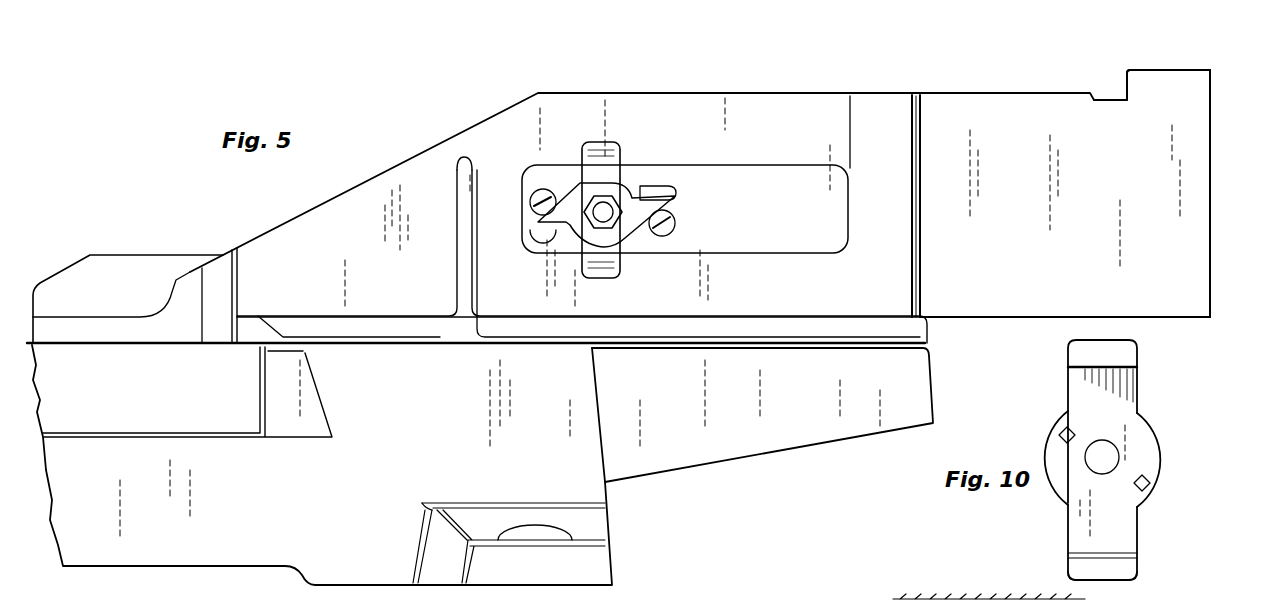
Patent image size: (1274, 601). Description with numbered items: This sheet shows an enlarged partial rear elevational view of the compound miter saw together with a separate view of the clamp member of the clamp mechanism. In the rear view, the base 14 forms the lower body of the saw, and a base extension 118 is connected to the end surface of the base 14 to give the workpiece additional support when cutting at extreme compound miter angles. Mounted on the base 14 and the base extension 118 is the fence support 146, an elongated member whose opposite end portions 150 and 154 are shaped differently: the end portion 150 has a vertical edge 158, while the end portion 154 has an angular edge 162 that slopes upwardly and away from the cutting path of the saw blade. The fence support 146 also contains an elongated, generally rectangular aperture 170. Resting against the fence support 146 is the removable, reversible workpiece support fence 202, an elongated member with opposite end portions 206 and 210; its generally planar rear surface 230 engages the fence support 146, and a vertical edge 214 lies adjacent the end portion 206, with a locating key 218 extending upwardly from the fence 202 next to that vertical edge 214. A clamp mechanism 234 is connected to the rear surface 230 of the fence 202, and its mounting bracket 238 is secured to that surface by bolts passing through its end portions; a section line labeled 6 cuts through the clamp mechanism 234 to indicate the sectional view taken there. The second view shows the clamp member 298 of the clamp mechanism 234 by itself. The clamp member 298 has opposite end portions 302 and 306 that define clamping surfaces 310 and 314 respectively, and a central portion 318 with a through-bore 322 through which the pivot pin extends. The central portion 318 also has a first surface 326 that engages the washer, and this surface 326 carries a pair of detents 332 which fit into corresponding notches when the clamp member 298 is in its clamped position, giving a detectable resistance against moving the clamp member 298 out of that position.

In FIG. 5, the base 14 is at (398, 461).
In FIG. 5, the base extension 118 is at (933, 401).
In FIG. 5, the fence support 146 is at (927, 333).
In FIG. 5, the end portion 150 is at (912, 233).
In FIG. 5, the end portion 154 is at (253, 300).
In FIG. 5, the vertical edge 158 is at (920, 237).
In FIG. 5, the angular edge 162 is at (194, 268).
In FIG. 5, the elongated, generally rectangular aperture 170 is at (768, 176).
In FIG. 5, the workpiece support fence 202 is at (808, 221).
In FIG. 5, the end portion 206 is at (1173, 194).
In FIG. 5, the end portion 210 is at (399, 258).
In FIG. 5, the vertical edge 214 is at (1212, 200).
In FIG. 5, the locating key 218 is at (1124, 75).
In FIG. 5, the rear surface 230 is at (1092, 304).
In FIG. 5, the clamp mechanism 234 is at (627, 159).
In FIG. 5, the section line 6- 6 is at (506, 208).
In FIG. 10, the mounting bracket 238 is at (989, 588).
In FIG. 10, the end portion 302 is at (1140, 343).
In FIG. 10, the clamping surface 310 is at (1125, 353).
In FIG. 10, the clamp member 298 is at (1135, 391).
In FIG. 10, the central portion 318 is at (1183, 412).
In FIG. 10, the through-bore 322 is at (1117, 455).
In FIG. 10, the detents 332 is at (1072, 420).
In FIG. 10, the first surface 326 is at (1067, 482).
In FIG. 10, the clamping surface 314 is at (1127, 558).
In FIG. 10, the end portion 306 is at (1127, 568).